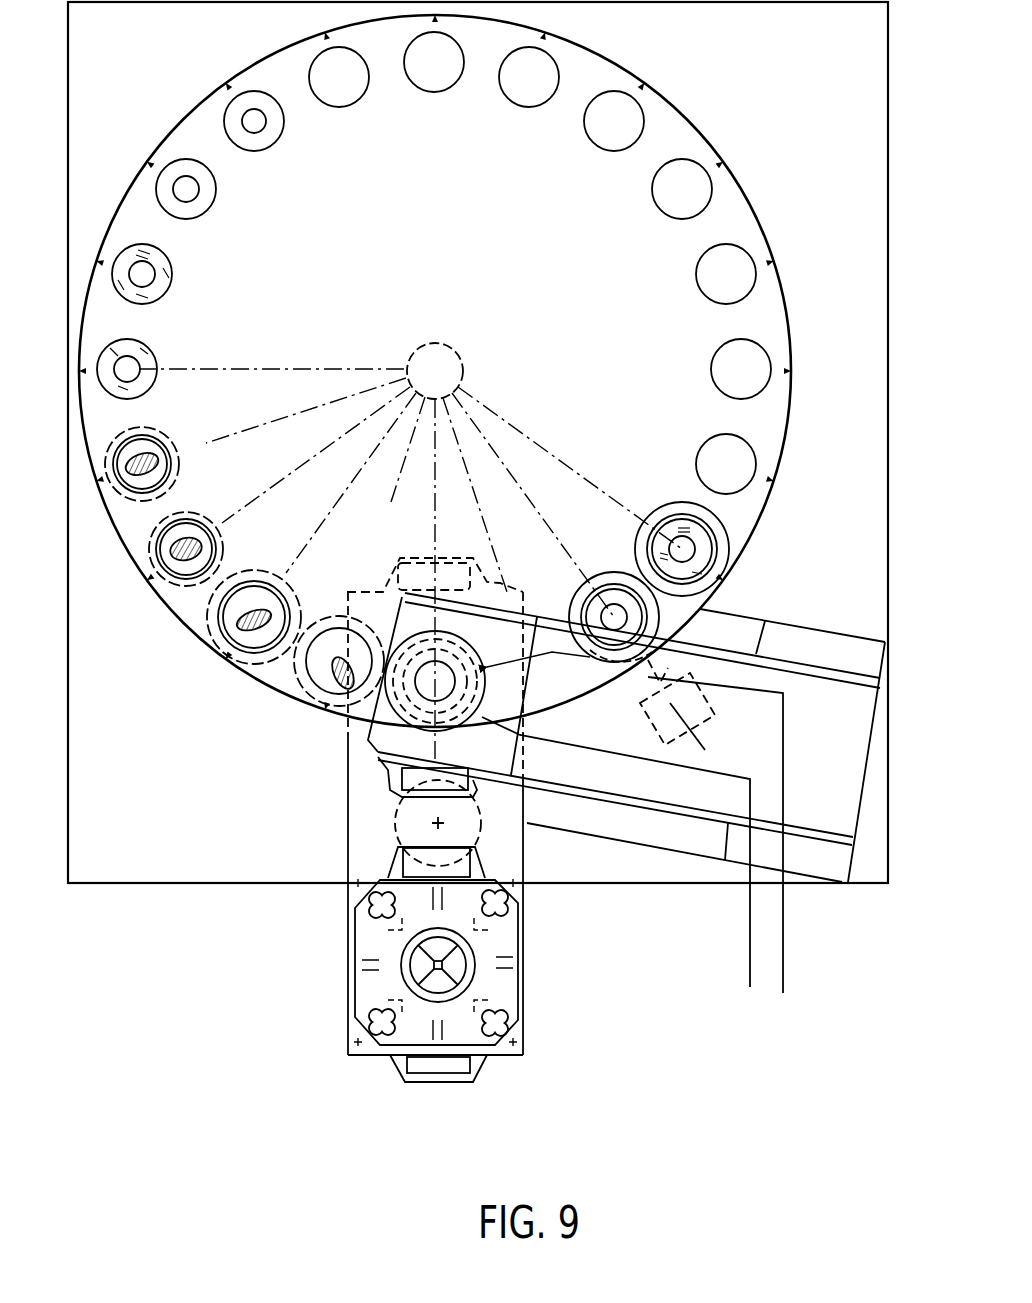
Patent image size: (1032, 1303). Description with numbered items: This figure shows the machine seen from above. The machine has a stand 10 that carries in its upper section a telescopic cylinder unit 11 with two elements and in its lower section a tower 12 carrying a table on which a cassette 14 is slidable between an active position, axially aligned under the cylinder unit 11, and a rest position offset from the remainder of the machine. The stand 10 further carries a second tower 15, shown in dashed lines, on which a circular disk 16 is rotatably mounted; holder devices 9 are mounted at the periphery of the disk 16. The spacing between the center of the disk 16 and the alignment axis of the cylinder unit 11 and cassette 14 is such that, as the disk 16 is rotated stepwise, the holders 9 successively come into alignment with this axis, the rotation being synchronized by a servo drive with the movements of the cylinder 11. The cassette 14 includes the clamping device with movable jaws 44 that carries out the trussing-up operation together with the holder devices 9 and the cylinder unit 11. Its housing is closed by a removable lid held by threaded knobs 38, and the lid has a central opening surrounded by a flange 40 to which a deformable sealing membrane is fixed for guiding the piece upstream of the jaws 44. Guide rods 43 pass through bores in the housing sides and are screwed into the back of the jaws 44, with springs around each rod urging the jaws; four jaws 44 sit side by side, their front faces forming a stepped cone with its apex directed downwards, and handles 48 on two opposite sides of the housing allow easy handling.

The holder devices 9 is at (646, 130).
The stand 10 is at (845, 805).
The telescopic cylinder unit 11 is at (403, 642).
The tower 12 is at (395, 823).
The cassette 14 is at (346, 745).
The second tower 15 is at (454, 352).
The circular disk 16 is at (782, 292).
The threaded knobs 38 is at (505, 1022).
The flange 40 is at (403, 968).
The guide rods 43 is at (372, 958).
The jaws 44 is at (432, 978).
The handles 48 is at (480, 1062).